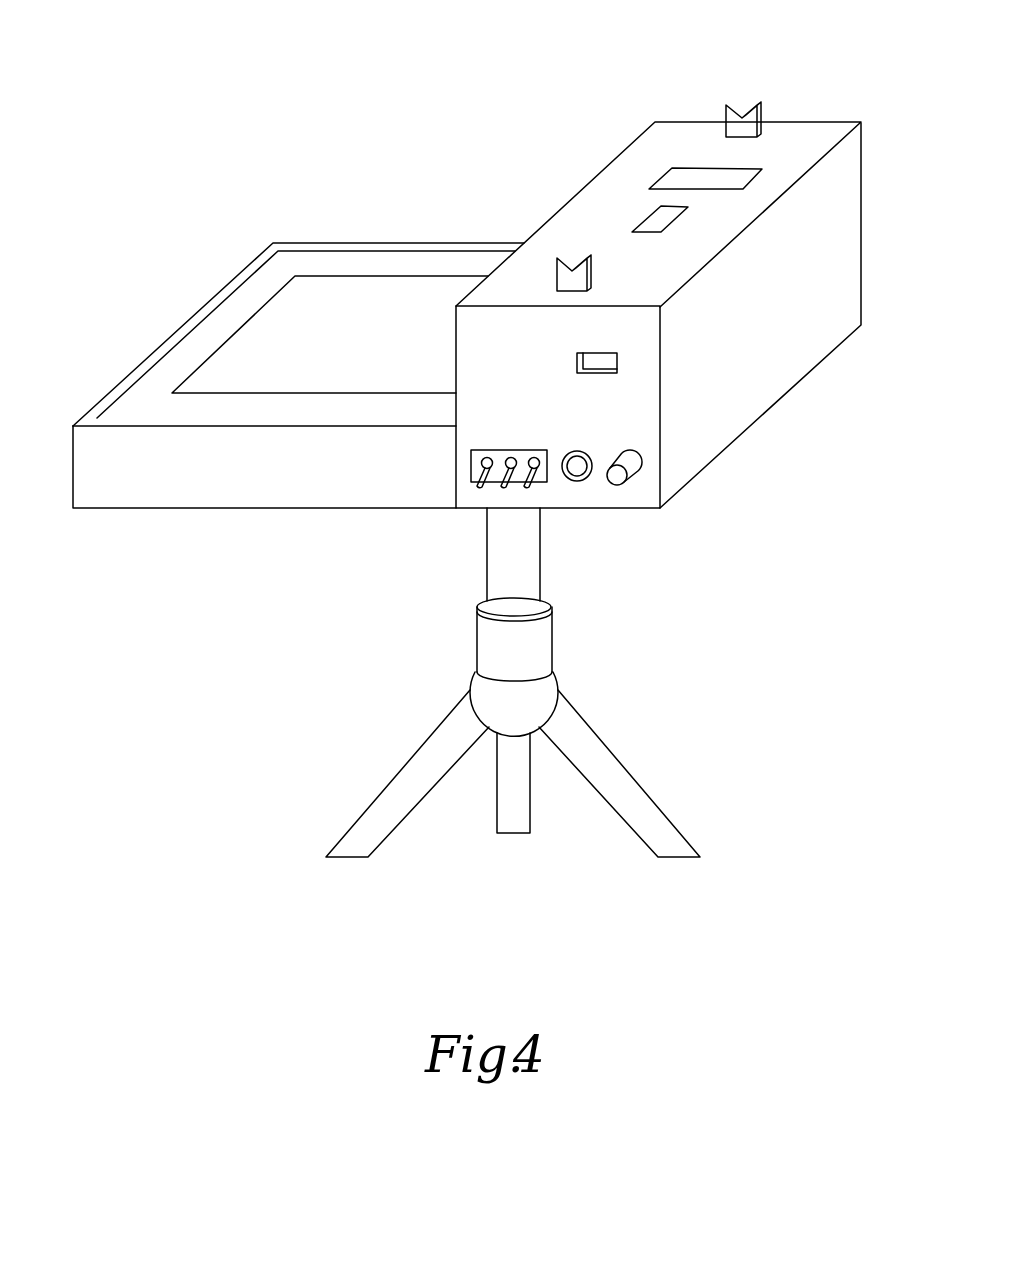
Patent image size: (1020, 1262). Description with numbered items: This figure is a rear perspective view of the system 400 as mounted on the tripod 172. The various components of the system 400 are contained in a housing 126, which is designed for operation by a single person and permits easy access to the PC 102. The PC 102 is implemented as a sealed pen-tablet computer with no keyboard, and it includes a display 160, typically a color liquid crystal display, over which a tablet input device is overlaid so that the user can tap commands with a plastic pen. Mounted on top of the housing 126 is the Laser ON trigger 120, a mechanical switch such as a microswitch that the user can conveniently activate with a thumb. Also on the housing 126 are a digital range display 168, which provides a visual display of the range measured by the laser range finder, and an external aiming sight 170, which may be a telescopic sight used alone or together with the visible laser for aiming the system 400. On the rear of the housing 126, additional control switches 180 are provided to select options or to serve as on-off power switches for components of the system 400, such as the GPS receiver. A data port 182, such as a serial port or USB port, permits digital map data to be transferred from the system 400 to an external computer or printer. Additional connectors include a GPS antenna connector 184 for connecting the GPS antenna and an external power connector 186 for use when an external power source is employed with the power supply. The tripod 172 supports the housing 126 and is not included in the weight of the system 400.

The system 400 is at (206, 649).
The PC 102 is at (253, 290).
The housing 126 is at (120, 487).
The display 160 is at (366, 294).
The aiming sight 170 is at (573, 267).
The digital range display 168 is at (678, 175).
The Laser ON trigger 120 is at (647, 222).
The data port 182 is at (617, 363).
The control switches 180 is at (460, 469).
The external power connector 186 is at (577, 481).
The GPS antenna connector 184 is at (636, 474).
The tripod 172 is at (415, 653).